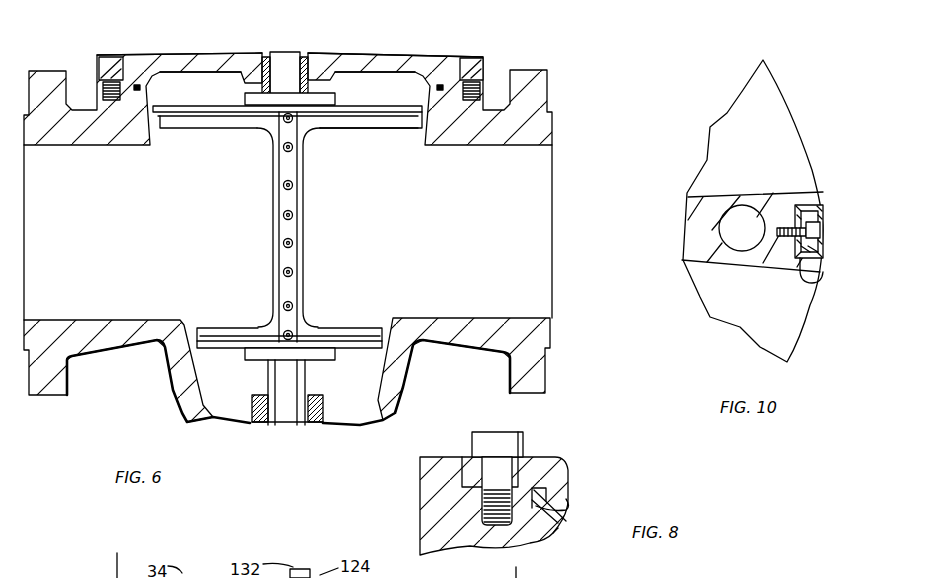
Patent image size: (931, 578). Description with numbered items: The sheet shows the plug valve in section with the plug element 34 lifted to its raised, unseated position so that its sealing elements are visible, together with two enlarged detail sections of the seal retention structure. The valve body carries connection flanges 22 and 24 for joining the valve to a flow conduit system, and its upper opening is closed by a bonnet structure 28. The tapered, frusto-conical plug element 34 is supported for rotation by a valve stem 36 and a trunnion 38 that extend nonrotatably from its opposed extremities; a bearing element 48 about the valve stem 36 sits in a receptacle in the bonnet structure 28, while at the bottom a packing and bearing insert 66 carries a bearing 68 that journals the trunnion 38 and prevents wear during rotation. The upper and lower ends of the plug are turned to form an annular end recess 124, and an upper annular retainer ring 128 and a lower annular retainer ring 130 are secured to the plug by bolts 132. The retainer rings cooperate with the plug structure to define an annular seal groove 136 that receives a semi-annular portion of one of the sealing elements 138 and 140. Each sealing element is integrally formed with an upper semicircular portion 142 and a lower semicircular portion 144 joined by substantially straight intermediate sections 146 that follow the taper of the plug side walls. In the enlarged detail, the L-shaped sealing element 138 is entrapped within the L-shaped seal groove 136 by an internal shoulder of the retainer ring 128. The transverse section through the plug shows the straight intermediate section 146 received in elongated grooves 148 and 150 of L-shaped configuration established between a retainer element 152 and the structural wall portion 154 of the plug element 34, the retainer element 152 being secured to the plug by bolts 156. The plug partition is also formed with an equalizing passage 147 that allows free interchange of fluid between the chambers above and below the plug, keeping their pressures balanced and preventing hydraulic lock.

In FIG. 6, the connection flange 22 is at (47, 74).
In FIG. 6, the connection flange 24 is at (524, 75).
In FIG. 6, the bonnet structure 28 is at (171, 57).
In FIG. 6, the plug element 34 is at (270, 150).
In FIG. 10, the plug element 34 is at (794, 106).
In FIG. 6, the valve stem 36 is at (284, 62).
In FIG. 6, the trunnion 38 is at (293, 412).
In FIG. 6, the bearing element 48 is at (318, 75).
In FIG. 6, the packing and bearing insert 66 is at (327, 400).
In FIG. 6, the bearing 68 is at (318, 420).
In FIG. 8, the annular end recess 124 is at (530, 488).
In FIG. 6, the upper annular retainer ring 128 is at (214, 104).
In FIG. 8, the upper annular retainer ring 128 is at (566, 476).
In FIG. 6, the lower annular retainer ring 130 is at (222, 347).
In FIG. 8, the bolt 132 is at (490, 430).
In FIG. 8, the annular seal groove 136 is at (558, 535).
In FIG. 6, the sealing element 138 is at (137, 89).
In FIG. 8, the sealing element 138 is at (563, 506).
In FIG. 10, the sealing element 138 is at (822, 252).
In FIG. 6, the sealing element 140 is at (362, 118).
In FIG. 6, the upper semicircular portion 142 is at (205, 118).
In FIG. 6, the lower semicircular portion 144 is at (221, 340).
In FIG. 6, the intermediate section 146 is at (275, 232).
In FIG. 10, the equalizing passage 147 is at (720, 223).
In FIG. 10, the elongated groove 148 is at (818, 283).
In FIG. 10, the elongated groove 150 is at (818, 206).
In FIG. 10, the retainer element 152 is at (822, 218).
In FIG. 10, the structural wall portion 154 is at (757, 200).
In FIG. 10, the bolt 156 is at (812, 231).